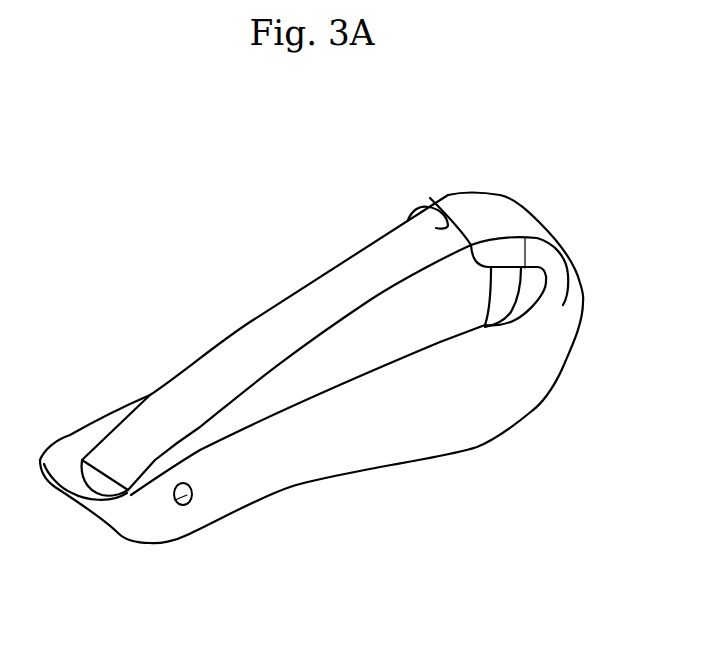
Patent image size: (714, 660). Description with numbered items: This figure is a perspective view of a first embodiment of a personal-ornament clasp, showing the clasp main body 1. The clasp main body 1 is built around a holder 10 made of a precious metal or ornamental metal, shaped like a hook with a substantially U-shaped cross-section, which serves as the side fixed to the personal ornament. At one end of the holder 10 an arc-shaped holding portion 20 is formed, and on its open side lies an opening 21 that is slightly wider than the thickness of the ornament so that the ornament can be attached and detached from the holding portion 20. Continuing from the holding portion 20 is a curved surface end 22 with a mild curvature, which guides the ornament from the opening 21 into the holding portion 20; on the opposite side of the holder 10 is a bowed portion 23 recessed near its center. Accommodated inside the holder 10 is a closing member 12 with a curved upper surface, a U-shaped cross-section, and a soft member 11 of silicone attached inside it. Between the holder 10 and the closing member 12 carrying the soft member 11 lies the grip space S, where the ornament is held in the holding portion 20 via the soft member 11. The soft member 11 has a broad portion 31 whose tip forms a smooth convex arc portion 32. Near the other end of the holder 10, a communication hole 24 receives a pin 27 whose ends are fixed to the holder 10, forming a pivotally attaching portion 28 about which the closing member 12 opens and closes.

The clasp main body 1 is at (614, 294).
The holder 10 is at (527, 362).
The soft member 11 is at (521, 298).
The closing member 12 is at (268, 327).
The holding portion 20 is at (545, 266).
The opening 21 is at (440, 222).
The curved surface end 22 is at (73, 432).
The bowed portion 23 is at (299, 493).
The communication hole 24 is at (174, 501).
The pin 27 is at (170, 497).
The pivotally attaching portion 28 is at (203, 492).
The broad portion 31 is at (543, 296).
The convex arc portion 32 is at (547, 282).
The grip space S is at (537, 272).